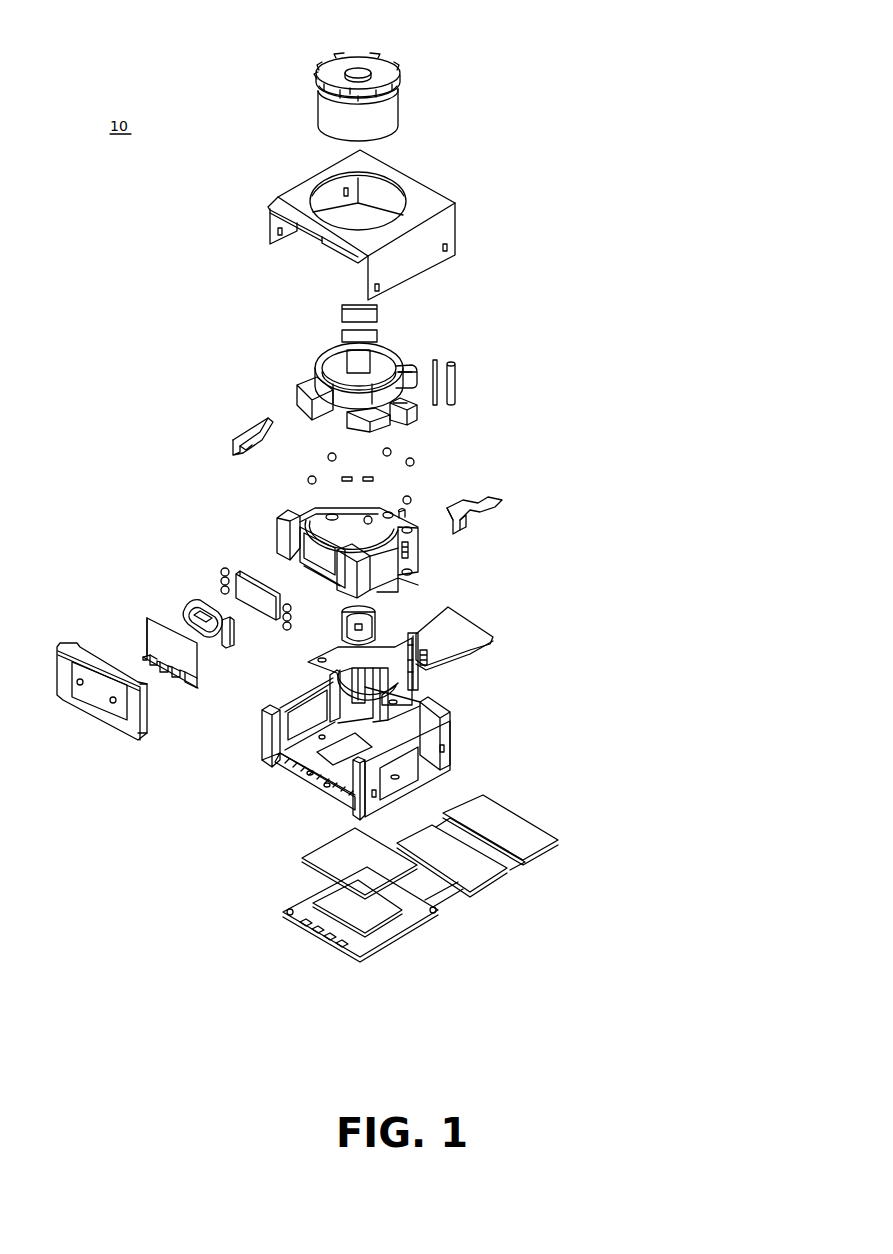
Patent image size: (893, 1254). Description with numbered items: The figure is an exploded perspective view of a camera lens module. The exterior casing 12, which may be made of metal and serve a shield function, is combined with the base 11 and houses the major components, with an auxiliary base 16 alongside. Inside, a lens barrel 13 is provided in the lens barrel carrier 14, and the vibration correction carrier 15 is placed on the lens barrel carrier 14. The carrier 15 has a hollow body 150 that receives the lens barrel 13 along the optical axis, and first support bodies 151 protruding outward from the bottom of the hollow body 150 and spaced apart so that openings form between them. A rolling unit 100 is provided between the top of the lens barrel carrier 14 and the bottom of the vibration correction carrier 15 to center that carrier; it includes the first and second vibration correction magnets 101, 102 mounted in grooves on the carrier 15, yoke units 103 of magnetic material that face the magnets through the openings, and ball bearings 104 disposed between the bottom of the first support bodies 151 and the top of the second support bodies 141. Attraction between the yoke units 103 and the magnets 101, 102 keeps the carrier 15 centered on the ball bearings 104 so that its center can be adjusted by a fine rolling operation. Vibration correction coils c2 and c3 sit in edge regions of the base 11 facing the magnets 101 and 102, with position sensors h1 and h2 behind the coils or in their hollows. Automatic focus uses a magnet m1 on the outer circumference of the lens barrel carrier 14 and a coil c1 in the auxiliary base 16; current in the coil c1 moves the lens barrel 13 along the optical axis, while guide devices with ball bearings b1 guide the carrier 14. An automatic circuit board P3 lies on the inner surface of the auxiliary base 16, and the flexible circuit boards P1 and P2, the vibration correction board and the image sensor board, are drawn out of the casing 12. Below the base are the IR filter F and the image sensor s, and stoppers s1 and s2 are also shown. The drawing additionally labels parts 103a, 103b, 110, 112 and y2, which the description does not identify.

The base 11 is at (300, 784).
The exterior casing 12 is at (440, 188).
The lens barrel 13 is at (394, 108).
The lens barrel carrier 14 is at (276, 536).
The vibration correction carrier 15 is at (365, 380).
The auxiliary base 16 is at (104, 705).
The rolling unit 100 is at (533, 592).
The first vibration correction magnet 101 is at (453, 370).
The second vibration correction magnet 102 is at (372, 313).
The yoke unit 103 is at (431, 513).
The ball bearing 103a is at (352, 478).
The ball retainer 103b is at (373, 479).
The ball bearings 104 is at (363, 516).
The housing body 110 is at (437, 712).
The inner bracket 112 is at (348, 673).
The second support bodies 141 is at (326, 515).
The hollow body 150 is at (343, 402).
The first support bodies 151 is at (410, 368).
The yoke y2 is at (372, 337).
The stopper s1 is at (495, 505).
The stopper s2 is at (245, 433).
The ball bearings b1 is at (221, 570).
The automatic focus magnet m1 is at (258, 582).
The automatic focus coil c1 is at (186, 606).
The first vibration correction coil c2 is at (412, 647).
The second vibration correction coil c3 is at (345, 623).
The first position sensor h1 is at (234, 640).
The second position sensor h2 is at (428, 657).
The vibration correction flexible circuit board P1 is at (477, 633).
The image sensor flexible circuit board P2 is at (483, 870).
The automatic circuit board P3 is at (153, 637).
The IR filter F is at (327, 860).
The image sensor s is at (370, 917).